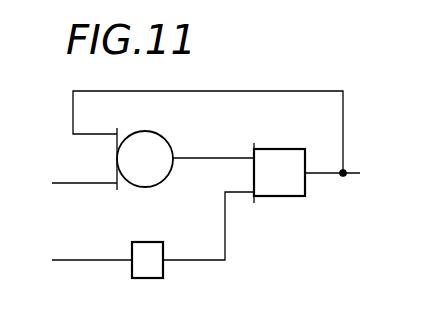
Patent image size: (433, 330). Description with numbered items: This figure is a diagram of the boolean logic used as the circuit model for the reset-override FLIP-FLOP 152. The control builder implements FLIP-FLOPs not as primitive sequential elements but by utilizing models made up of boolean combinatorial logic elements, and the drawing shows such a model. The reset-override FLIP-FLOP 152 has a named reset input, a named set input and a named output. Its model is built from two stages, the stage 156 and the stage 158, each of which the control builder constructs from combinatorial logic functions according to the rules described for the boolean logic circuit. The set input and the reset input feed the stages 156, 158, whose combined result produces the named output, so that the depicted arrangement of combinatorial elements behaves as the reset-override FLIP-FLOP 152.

The reset-override FLIP-FLOP 152 is at (207, 184).
The stage 156 is at (268, 149).
The stage 158 is at (163, 135).